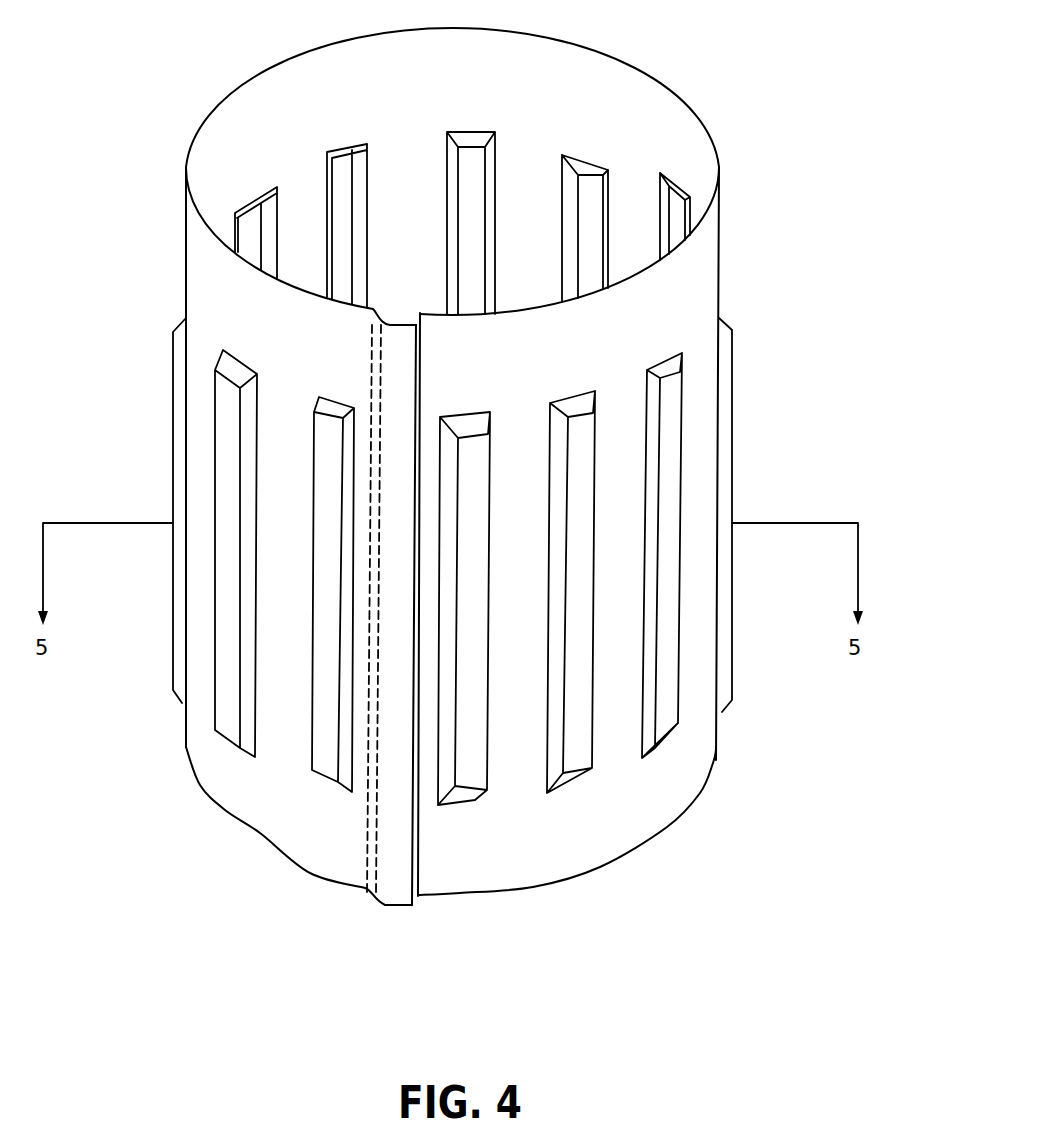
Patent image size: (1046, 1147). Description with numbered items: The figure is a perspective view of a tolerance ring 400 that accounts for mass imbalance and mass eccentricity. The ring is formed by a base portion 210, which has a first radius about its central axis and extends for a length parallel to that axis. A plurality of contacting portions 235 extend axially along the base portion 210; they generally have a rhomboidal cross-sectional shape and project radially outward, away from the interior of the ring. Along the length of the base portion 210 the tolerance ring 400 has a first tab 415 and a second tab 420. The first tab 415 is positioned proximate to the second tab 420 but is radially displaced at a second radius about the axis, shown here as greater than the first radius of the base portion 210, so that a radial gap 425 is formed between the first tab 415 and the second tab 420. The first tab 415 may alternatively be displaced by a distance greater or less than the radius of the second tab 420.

The tolerance ring 400 is at (758, 90).
The base portion 210 is at (205, 278).
The contacting portions 235 is at (672, 405).
The first tab 415 is at (390, 802).
The radial gap 425 is at (418, 897).
The second tab 420 is at (430, 845).